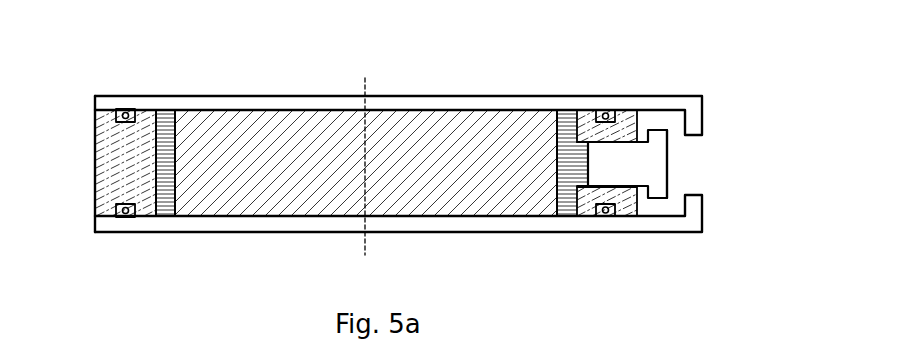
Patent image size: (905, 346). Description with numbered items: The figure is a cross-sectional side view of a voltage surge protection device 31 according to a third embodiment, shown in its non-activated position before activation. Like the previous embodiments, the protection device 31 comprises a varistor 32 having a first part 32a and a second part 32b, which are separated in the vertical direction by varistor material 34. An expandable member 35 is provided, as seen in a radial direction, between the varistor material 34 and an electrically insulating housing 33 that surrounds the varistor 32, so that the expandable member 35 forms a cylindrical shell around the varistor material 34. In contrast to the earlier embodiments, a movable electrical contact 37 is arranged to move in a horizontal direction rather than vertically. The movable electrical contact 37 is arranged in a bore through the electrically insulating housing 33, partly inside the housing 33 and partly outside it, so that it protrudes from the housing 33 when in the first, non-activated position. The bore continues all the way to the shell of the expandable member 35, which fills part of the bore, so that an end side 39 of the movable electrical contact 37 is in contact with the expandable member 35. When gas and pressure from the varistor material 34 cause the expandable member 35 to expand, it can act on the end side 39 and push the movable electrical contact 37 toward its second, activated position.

The voltage surge protection device 31 is at (714, 60).
The varistor 32 is at (101, 103).
The first part of the varistor 32a is at (620, 102).
The second part of the varistor 32b is at (580, 227).
The electrically insulating housing 33 is at (588, 122).
The varistor material 34 is at (270, 200).
The expandable member 35 is at (165, 195).
The movable electrical contact 37 is at (658, 163).
The end side of the movable electrical contact 39 is at (588, 163).